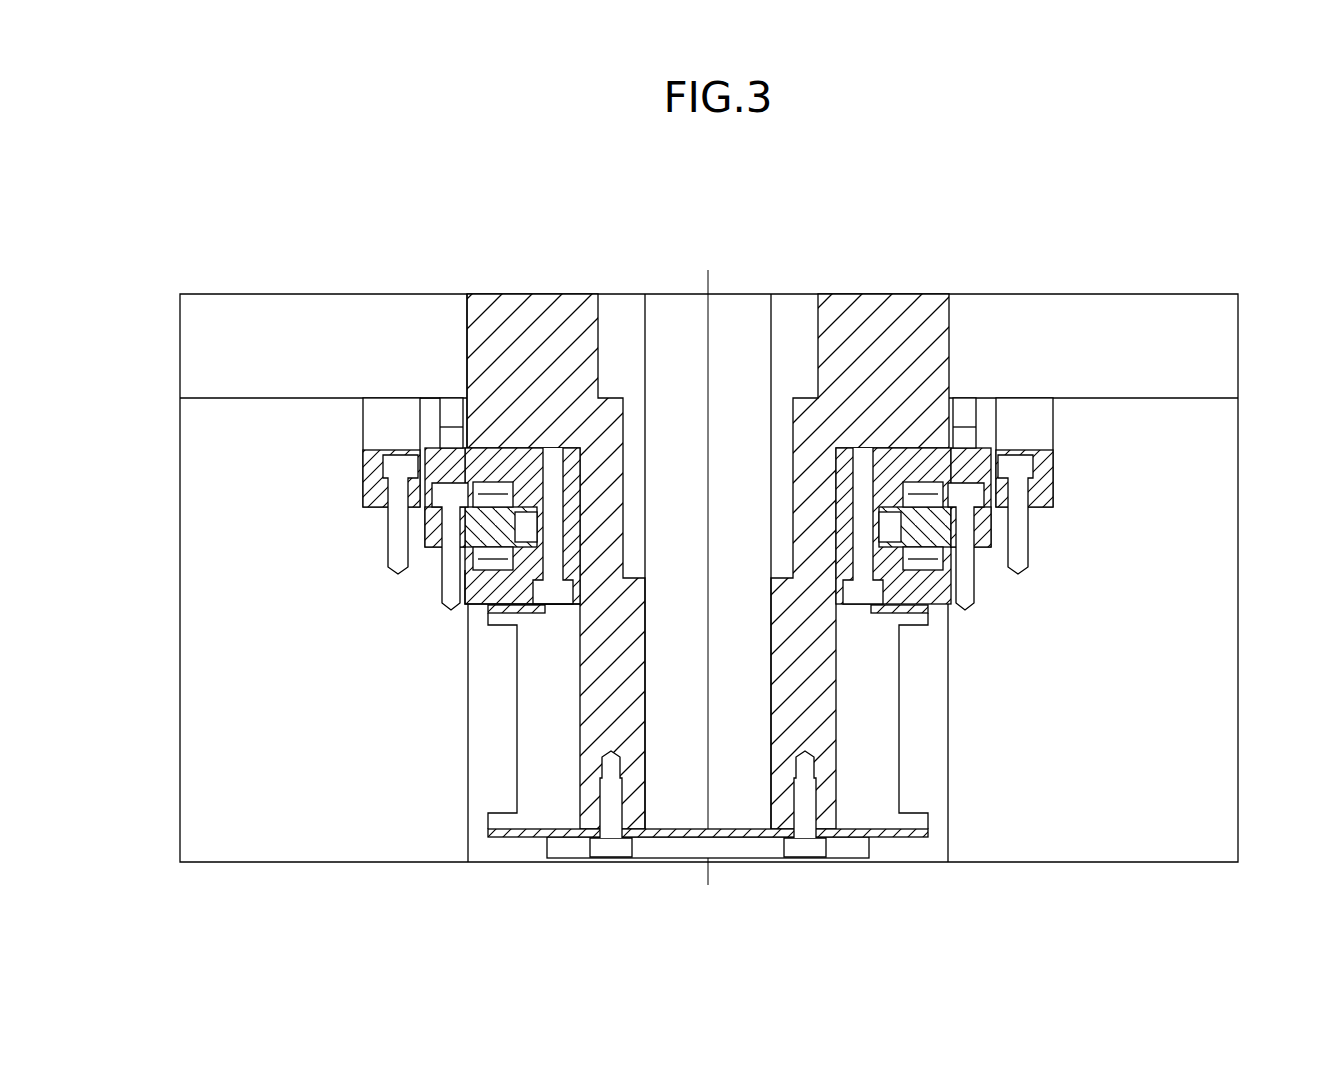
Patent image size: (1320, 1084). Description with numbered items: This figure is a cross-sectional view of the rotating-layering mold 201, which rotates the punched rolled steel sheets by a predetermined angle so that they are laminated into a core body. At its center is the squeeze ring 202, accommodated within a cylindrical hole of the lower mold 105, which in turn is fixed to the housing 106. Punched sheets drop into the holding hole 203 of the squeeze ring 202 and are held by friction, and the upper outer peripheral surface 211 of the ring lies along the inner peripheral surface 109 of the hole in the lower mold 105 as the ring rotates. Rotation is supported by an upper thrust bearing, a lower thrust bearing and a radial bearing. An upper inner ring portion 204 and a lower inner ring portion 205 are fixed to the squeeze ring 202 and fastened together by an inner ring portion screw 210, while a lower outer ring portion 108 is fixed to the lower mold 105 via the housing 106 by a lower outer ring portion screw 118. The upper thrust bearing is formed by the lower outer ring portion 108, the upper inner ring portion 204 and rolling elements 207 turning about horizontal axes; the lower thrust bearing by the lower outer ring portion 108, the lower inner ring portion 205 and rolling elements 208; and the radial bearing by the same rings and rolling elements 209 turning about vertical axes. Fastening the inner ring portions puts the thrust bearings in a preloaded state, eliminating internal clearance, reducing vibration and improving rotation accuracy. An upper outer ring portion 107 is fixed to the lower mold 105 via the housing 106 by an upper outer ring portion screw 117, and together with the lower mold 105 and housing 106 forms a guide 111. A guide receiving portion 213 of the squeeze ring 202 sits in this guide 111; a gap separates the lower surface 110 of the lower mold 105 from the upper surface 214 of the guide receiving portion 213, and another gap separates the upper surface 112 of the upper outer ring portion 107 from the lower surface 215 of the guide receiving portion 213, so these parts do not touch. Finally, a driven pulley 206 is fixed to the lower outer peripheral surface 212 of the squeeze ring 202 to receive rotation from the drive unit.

The lower mold 105 is at (232, 340).
The housing 106 is at (263, 852).
The upper outer ring portion 107 is at (1043, 468).
The lower outer ring portion 108 is at (903, 525).
The inner peripheral surface 109 is at (467, 348).
The lower surface 110 is at (440, 396).
The guide 111 is at (410, 430).
The upper surface 112 is at (388, 537).
The upper outer ring portion screw 117 is at (392, 562).
The lower outer ring portion screw 118 is at (440, 587).
The rotating-layering mold 201 is at (777, 240).
The squeeze ring 202 is at (888, 294).
The holding hole 203 is at (646, 427).
The upper inner ring portion 204 is at (900, 453).
The lower inner ring portion 205 is at (915, 590).
The driven pulley 206 is at (550, 805).
The rolling elements 207 is at (997, 449).
The rolling elements 208 is at (925, 563).
The rolling elements 209 is at (905, 523).
The inner ring portion screw 210 is at (470, 604).
The upper outer peripheral surface 211 is at (467, 312).
The lower outer peripheral surface 212 is at (580, 717).
The guide receiving portion 213 is at (423, 420).
The upper surface 214 is at (420, 407).
The lower surface 215 is at (432, 448).